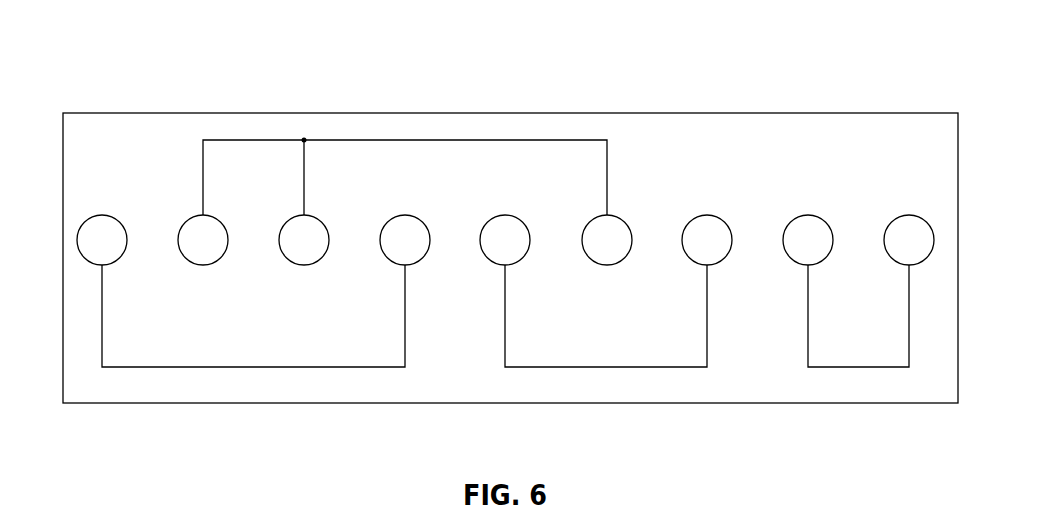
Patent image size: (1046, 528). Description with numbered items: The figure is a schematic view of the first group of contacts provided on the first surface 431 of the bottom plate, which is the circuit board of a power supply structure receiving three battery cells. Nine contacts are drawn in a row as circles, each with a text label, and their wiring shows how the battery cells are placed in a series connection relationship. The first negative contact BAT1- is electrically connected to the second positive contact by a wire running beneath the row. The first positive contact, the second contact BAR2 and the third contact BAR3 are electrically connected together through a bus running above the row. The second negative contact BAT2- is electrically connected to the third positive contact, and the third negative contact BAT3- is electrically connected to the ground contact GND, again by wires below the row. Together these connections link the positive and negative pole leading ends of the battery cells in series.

The first surface 431 is at (858, 140).
The first negative contact BAT1- is at (241, 279).
The second contact BAR2 is at (304, 218).
The second negative contact BAT2- is at (593, 279).
The third contact BAR3 is at (607, 255).
The third negative contact BAT3- is at (846, 279).
The ground contact GND is at (909, 228).